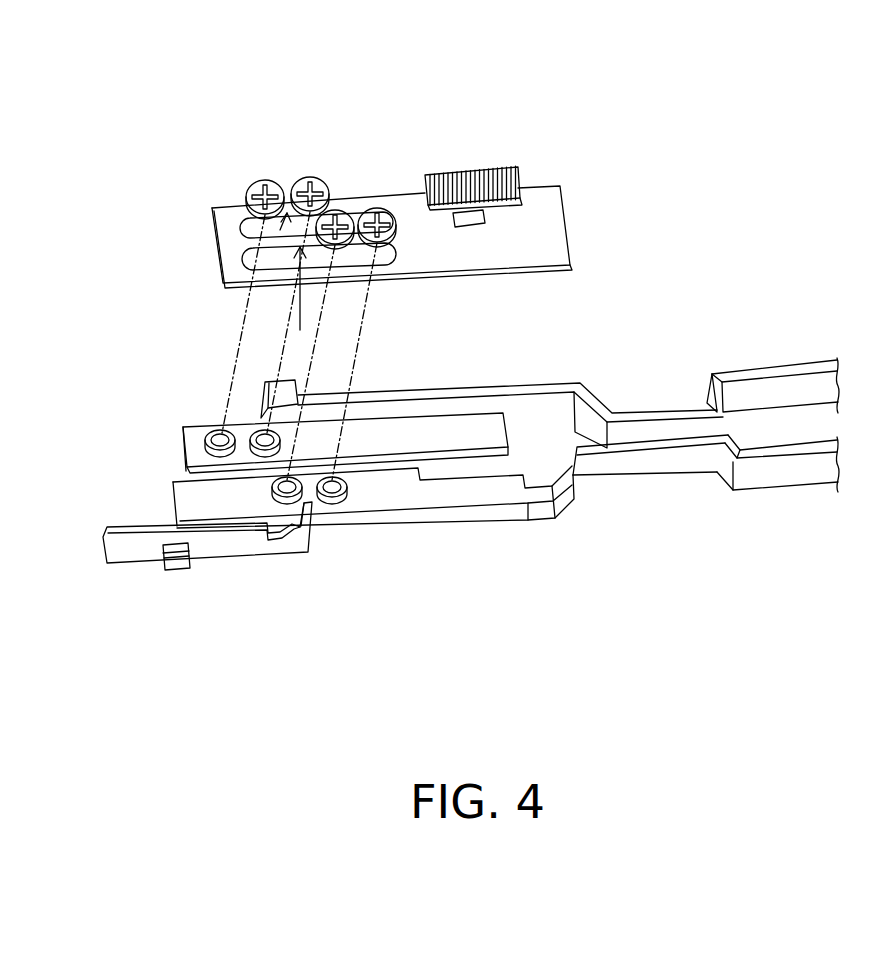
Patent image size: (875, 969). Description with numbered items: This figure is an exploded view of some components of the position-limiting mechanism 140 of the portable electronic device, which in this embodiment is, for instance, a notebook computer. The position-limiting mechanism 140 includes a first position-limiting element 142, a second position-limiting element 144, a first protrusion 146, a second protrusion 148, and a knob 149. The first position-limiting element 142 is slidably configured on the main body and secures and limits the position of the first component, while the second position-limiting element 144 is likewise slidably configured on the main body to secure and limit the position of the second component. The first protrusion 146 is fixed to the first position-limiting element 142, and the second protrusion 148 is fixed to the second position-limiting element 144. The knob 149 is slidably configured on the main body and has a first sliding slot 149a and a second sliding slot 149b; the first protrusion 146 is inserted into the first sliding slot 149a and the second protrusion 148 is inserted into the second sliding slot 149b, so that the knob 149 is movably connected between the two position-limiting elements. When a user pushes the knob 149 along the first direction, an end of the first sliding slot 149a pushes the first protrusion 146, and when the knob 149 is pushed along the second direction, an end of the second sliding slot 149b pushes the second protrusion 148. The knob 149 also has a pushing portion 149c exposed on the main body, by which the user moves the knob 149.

The position-limiting mechanism 140 is at (350, 540).
The first position-limiting element 142 is at (777, 390).
The second position-limiting element 144 is at (232, 538).
The first protrusion 146 is at (257, 180).
The second protrusion 148 is at (388, 232).
The knob 149 is at (399, 205).
The first sliding slot 149a is at (257, 247).
The second sliding slot 149b is at (235, 332).
The pushing portion 149c is at (478, 205).